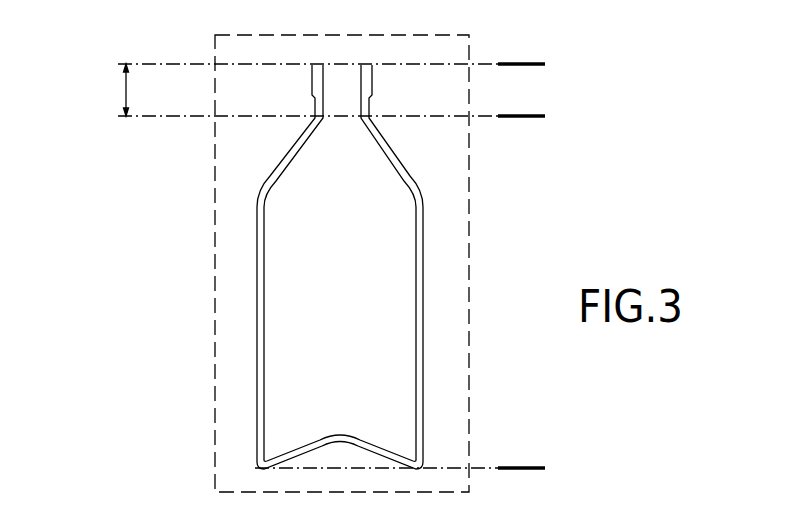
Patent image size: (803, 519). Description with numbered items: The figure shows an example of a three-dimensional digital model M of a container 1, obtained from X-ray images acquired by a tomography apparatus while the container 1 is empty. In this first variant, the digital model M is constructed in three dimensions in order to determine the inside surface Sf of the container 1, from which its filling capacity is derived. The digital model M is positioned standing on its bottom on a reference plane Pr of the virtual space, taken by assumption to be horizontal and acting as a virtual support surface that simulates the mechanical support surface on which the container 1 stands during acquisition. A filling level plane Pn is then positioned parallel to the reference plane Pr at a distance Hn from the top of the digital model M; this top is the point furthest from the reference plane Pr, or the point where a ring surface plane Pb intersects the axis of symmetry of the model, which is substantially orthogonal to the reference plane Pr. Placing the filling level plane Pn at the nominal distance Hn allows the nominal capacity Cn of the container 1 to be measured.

The container 1 is at (339, 247).
The ring surface plane Pb is at (522, 63).
The filling level plane Pn is at (522, 115).
The reference plane Pr is at (521, 467).
The distance Hn is at (111, 90).
The nominal capacity Cn is at (339, 267).
The digital model M is at (294, 267).
The inside surface Sf is at (416, 383).